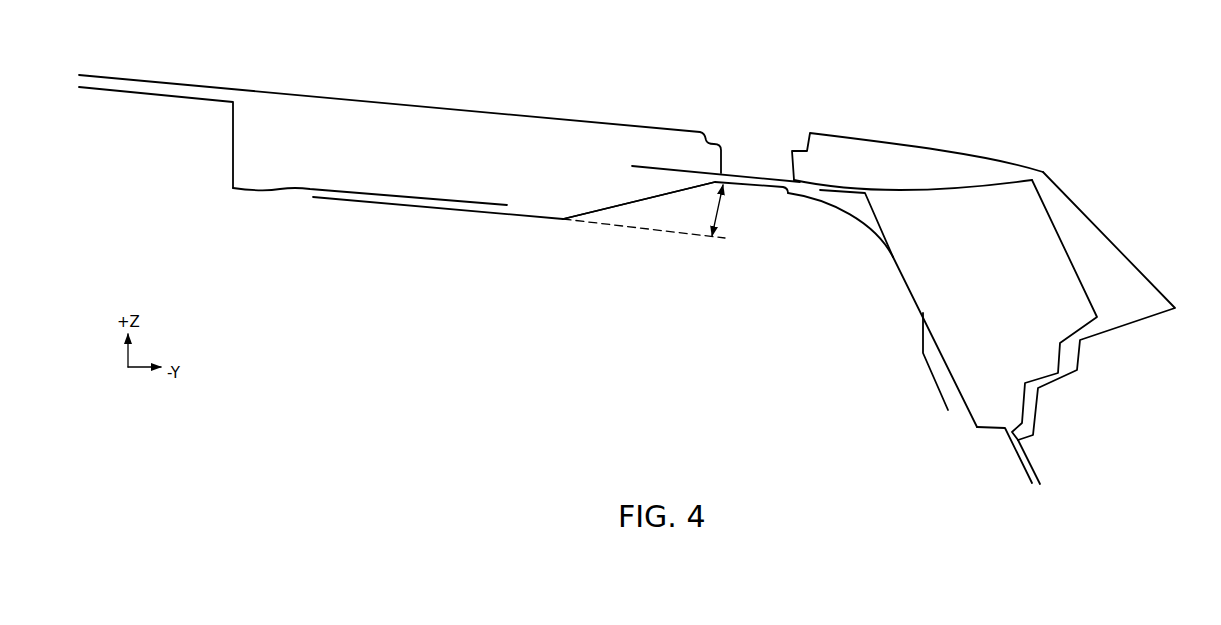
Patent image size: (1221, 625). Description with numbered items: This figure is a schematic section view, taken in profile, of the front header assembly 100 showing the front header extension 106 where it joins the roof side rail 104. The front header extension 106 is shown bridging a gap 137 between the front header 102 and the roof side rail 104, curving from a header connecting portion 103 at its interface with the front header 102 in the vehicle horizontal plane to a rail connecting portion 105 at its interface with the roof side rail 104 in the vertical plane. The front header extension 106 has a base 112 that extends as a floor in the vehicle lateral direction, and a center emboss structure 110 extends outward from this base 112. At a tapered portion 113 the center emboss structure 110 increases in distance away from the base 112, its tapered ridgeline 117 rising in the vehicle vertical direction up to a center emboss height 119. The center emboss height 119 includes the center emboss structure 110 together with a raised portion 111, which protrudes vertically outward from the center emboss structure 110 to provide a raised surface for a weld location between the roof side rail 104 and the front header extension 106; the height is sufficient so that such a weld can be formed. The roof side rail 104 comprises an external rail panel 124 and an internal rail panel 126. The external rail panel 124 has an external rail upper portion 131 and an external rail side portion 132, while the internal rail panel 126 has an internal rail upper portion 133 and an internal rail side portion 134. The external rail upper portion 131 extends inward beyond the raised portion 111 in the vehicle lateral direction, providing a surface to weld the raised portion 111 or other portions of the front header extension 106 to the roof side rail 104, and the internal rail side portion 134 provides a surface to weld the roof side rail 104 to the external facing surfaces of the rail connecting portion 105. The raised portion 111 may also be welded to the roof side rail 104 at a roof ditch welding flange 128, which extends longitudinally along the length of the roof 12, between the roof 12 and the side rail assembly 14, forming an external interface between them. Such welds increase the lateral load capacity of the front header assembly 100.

The roof 12 is at (408, 102).
The side rail assembly 14 is at (912, 145).
The front header assembly 100 is at (209, 288).
The front header 102 is at (403, 193).
The header connecting portion 103 is at (338, 319).
The roof side rail 104 is at (1143, 129).
The rail connecting portion 105 is at (805, 368).
The front header extension 106 is at (675, 235).
The center emboss structure 110 is at (840, 238).
The raised portion 111 is at (782, 189).
The base 112 is at (350, 203).
The tapered portion 113 is at (521, 280).
The tapered ridgeline 117 is at (656, 197).
The center emboss height 119 is at (721, 210).
The external rail panel 124 is at (1075, 268).
The internal rail panel 126 is at (977, 427).
The roof ditch welding flange 128 is at (745, 84).
The external rail upper portion 131 is at (958, 186).
The external rail side portion 132 is at (1037, 187).
The internal rail upper portion 133 is at (838, 189).
The internal rail side portion 134 is at (947, 365).
The gap 137 is at (690, 326).